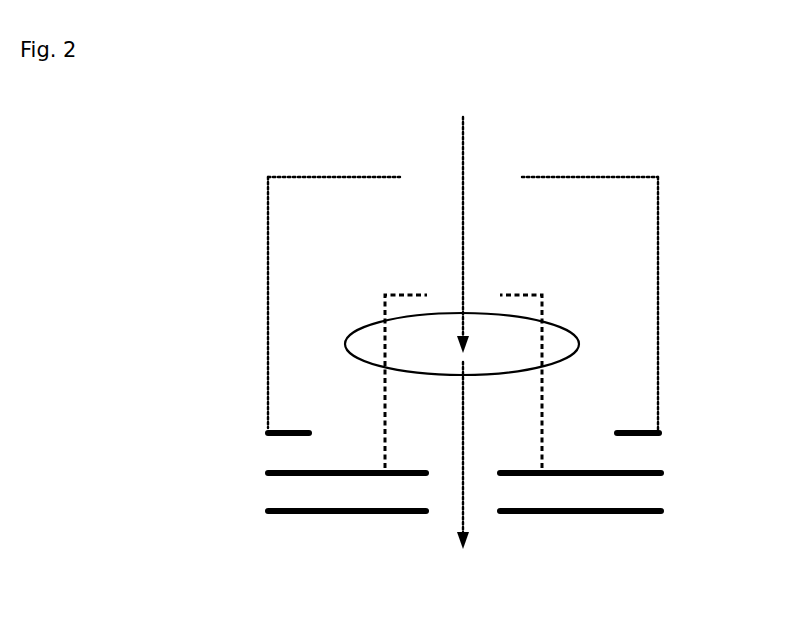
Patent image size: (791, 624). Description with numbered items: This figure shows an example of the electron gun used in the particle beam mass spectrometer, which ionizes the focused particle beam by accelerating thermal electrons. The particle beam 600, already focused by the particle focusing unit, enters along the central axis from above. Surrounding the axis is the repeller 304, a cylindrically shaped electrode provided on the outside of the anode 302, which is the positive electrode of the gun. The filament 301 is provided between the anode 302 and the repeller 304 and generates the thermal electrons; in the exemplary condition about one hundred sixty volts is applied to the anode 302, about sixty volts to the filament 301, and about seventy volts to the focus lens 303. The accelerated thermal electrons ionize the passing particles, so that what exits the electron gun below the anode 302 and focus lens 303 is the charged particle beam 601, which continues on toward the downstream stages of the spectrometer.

The filament 301 is at (588, 345).
The anode 302 is at (254, 473).
The focus lens 303 is at (303, 516).
The repeller 304 is at (288, 172).
The particle beam 600 is at (471, 155).
The charged particle beam 601 is at (486, 542).